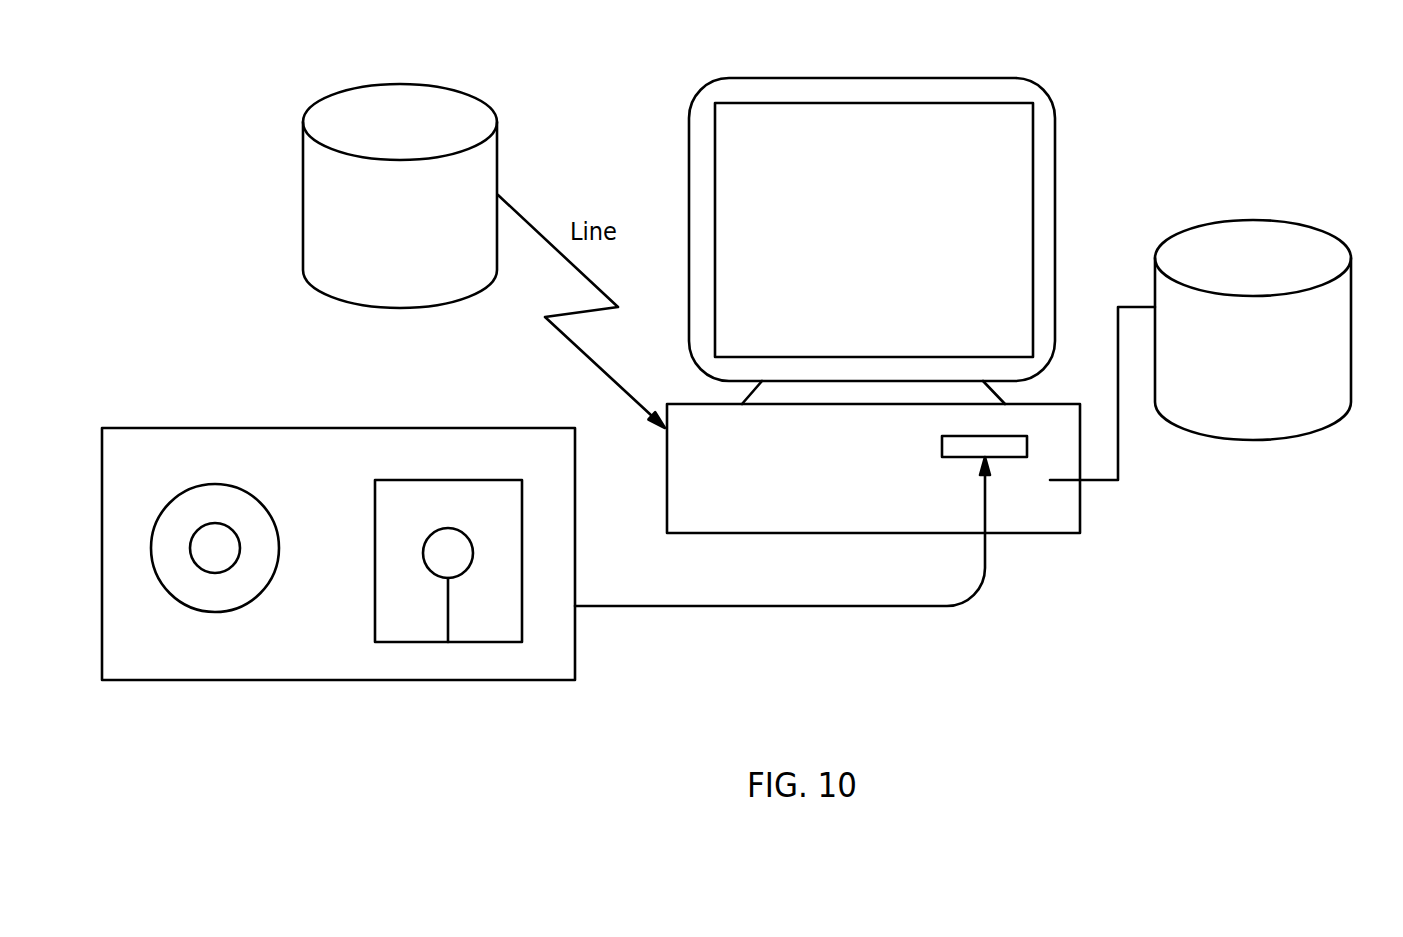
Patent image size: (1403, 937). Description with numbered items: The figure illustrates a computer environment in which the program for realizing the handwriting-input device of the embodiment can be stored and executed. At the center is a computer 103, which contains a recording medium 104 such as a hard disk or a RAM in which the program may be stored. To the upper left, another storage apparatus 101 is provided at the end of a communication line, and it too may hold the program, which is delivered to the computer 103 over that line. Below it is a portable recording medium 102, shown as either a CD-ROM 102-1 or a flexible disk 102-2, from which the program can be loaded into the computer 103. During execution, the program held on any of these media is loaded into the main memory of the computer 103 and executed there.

The storage apparatus 101 is at (470, 93).
The portable recording medium 102 is at (338, 531).
The CD-ROM 102-1 is at (213, 530).
The flexible disk 102-2 is at (447, 545).
The computer 103 is at (870, 78).
The recording medium 104 is at (1290, 222).